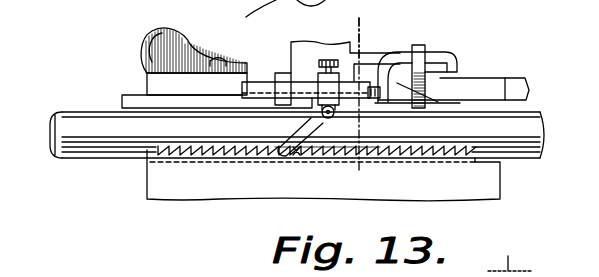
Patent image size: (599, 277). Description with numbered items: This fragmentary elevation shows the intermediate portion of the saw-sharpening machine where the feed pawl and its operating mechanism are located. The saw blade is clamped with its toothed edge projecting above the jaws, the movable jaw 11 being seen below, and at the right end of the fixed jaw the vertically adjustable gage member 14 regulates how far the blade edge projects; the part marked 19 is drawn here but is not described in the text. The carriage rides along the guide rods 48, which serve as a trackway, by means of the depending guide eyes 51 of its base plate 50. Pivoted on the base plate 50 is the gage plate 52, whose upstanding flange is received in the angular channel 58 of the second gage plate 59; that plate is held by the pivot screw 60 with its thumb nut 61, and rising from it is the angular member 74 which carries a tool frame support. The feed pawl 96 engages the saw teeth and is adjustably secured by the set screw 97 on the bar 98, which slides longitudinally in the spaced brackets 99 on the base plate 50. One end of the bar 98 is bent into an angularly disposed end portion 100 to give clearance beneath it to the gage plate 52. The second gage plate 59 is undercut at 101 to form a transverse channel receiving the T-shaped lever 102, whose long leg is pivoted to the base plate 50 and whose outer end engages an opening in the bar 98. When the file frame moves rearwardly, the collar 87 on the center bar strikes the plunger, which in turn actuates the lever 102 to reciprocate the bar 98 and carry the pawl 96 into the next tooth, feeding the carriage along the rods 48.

The movable jaw 11 is at (482, 192).
The gage member 14 is at (366, 30).
The ratchet rack 19 is at (317, 105).
The guide rods 48 is at (543, 143).
The base plate 50 is at (123, 100).
The guide eyes 51 is at (163, 82).
The gage plate 52 is at (507, 88).
The angular channel 58 is at (438, 78).
The second gage plate 59 is at (377, 55).
The pivot screw 60 is at (219, 59).
The thumb nut 61 is at (147, 42).
The angular member 74 is at (298, 55).
The collar 87 is at (525, 268).
The pawl 96 is at (312, 128).
The set screw 97 is at (328, 60).
The bar 98 is at (252, 88).
The brackets 99 is at (283, 92).
The angularly disposed end portion 100 is at (403, 57).
The undercut 101 is at (438, 100).
The T-shaped lever 102 is at (366, 100).